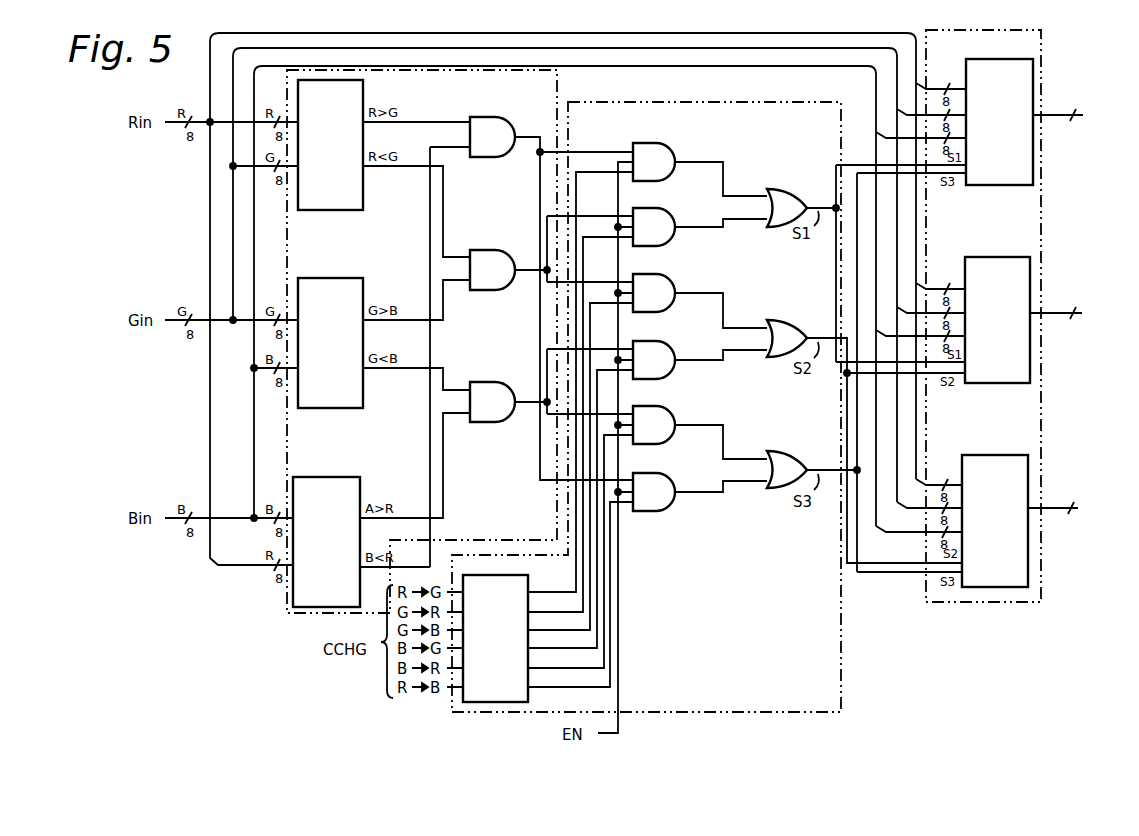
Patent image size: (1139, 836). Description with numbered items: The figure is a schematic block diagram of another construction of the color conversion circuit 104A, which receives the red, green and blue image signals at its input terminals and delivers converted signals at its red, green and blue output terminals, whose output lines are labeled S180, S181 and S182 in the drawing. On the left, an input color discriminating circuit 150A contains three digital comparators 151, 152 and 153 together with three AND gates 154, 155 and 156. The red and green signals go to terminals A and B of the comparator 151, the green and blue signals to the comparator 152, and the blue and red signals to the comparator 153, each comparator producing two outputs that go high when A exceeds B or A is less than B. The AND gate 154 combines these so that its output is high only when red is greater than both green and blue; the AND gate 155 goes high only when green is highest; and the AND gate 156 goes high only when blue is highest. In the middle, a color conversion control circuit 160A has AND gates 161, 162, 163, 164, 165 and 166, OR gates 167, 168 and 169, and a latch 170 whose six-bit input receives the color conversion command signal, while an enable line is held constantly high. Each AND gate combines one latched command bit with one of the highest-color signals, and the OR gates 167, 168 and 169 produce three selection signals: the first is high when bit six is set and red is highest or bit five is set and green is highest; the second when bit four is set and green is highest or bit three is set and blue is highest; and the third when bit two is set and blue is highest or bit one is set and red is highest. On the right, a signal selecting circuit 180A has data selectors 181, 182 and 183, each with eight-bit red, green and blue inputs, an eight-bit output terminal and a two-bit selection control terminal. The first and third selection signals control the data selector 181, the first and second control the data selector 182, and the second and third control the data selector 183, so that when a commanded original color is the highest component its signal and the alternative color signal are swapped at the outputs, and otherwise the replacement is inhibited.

The color component input bus lines 104A is at (906, 32).
The input color discriminating circuit 150A is at (418, 70).
The digital comparator 151 is at (364, 86).
The digital comparator 152 is at (336, 278).
The digital comparator 153 is at (335, 477).
The AND gate 154 is at (498, 117).
The AND gate 155 is at (494, 250).
The AND gate 156 is at (498, 382).
The color conversion control circuit 160A is at (753, 102).
The AND gate 161 is at (660, 143).
The AND gate 162 is at (660, 208).
The AND gate 163 is at (660, 274).
The AND gate 164 is at (660, 341).
The AND gate 165 is at (660, 406).
The AND gate 166 is at (660, 473).
The OR gate 167 is at (782, 189).
The OR gate 168 is at (786, 311).
The OR gate 169 is at (784, 442).
The latch 170 is at (545, 584).
The signal selecting circuit 180A is at (1044, 187).
The data selector 181 is at (1033, 68).
The data selector 182 is at (1030, 272).
The data selector 183 is at (1028, 465).
The R output signal line S180 is at (1050, 115).
The G output signal line S181 is at (1048, 313).
The B output signal line S182 is at (1048, 508).